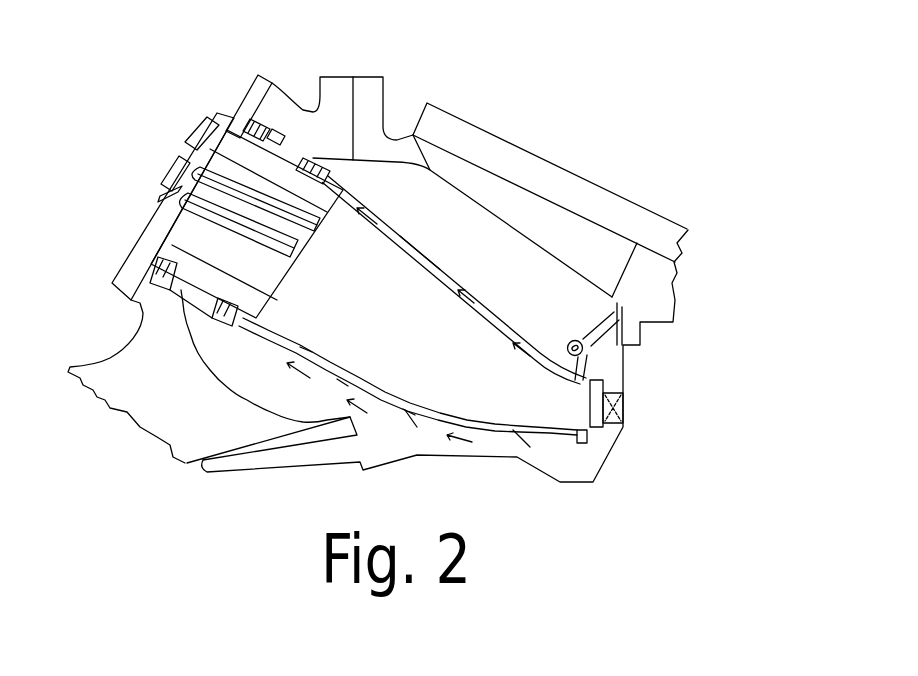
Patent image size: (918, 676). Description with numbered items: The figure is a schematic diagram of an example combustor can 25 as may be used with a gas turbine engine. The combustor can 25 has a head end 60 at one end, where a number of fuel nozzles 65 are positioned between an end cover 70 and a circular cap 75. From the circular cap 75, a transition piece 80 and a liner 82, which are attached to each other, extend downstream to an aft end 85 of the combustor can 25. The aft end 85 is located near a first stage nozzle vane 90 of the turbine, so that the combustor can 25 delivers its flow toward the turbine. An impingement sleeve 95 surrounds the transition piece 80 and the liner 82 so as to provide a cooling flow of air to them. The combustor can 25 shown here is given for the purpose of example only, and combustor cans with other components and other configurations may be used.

The combustor can 25 is at (524, 76).
The head end 60 is at (298, 282).
The fuel nozzles 65 is at (230, 117).
The end cover 70 is at (272, 81).
The circular cap 75 is at (270, 306).
The transition piece 80 is at (492, 327).
The liner 82 is at (398, 230).
The aft end 85 is at (587, 443).
The first stage nozzle vane 90 is at (625, 405).
The impingement sleeve 95 is at (415, 243).